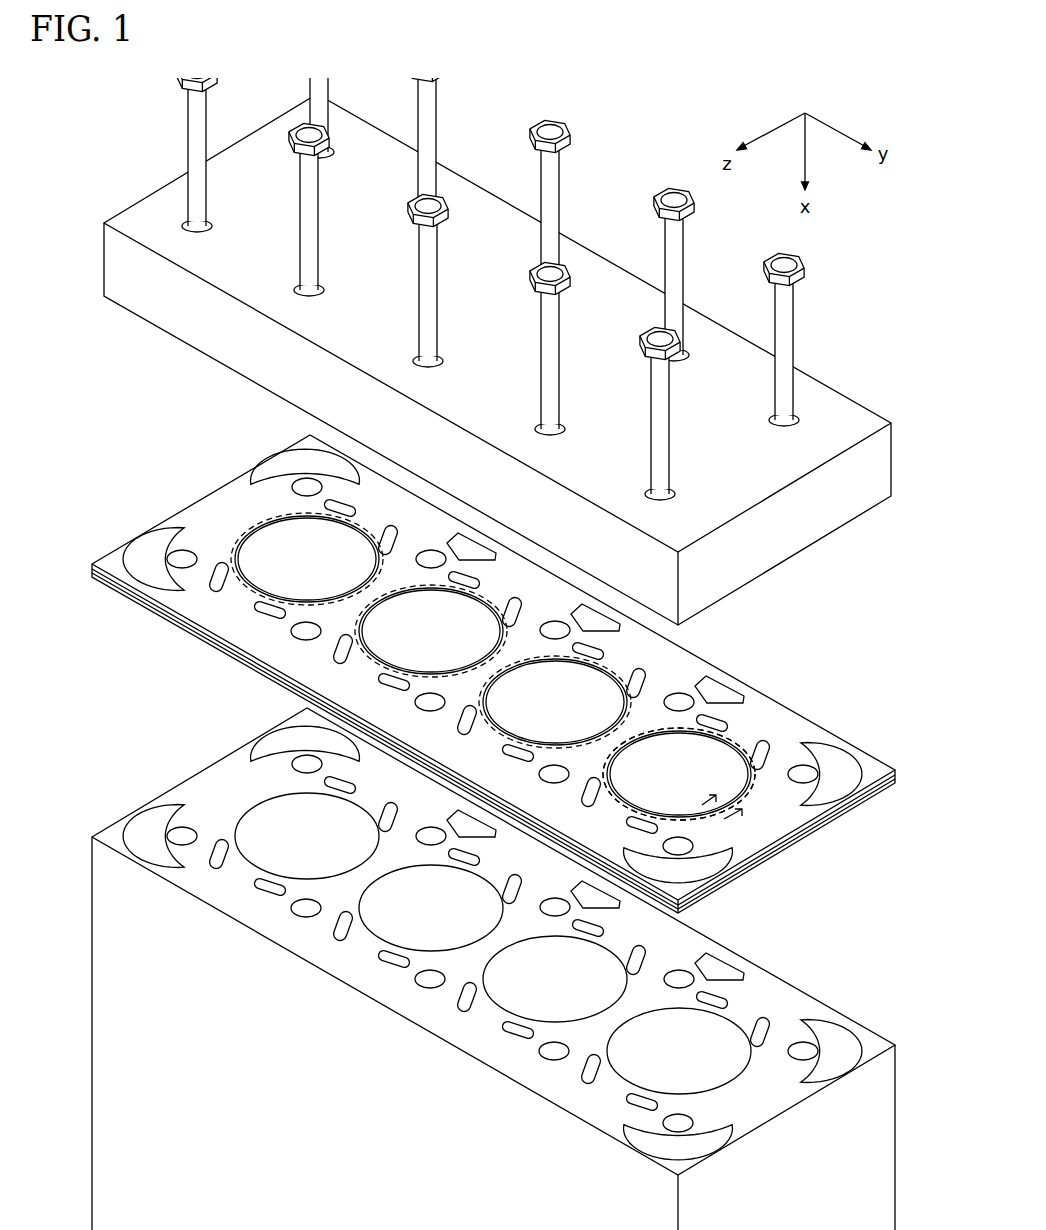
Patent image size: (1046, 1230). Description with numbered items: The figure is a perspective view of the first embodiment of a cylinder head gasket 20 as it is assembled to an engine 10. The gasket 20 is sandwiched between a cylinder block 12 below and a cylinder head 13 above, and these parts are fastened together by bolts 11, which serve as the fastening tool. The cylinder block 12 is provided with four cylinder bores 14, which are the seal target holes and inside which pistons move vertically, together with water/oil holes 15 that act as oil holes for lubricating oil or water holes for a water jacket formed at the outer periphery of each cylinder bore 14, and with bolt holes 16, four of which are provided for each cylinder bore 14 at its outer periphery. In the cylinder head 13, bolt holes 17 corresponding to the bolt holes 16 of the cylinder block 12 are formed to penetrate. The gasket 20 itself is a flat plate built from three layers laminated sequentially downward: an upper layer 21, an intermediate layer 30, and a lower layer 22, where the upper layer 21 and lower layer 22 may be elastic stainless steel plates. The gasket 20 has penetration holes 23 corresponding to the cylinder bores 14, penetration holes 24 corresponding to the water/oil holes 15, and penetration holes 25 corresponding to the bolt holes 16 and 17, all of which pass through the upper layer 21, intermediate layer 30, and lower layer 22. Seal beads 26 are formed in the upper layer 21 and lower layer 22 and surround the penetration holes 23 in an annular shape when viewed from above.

The engine 10 is at (609, 158).
The bolts 11 is at (675, 189).
The cylinder block 12 is at (221, 759).
The cylinder head 13 is at (170, 184).
The cylinder bores 14 is at (316, 842).
The water/oil holes 15 is at (157, 816).
The bolt holes 16 is at (194, 826).
The bolt holes 17 is at (211, 230).
The gasket 20 is at (213, 470).
The upper layer 21 is at (822, 818).
The lower layer 22 is at (735, 880).
The penetration holes 23 is at (310, 567).
The penetration holes 24 is at (722, 686).
The penetration holes 25 is at (683, 693).
The seal beads 26 is at (748, 797).
The intermediate layer 30 is at (782, 848).